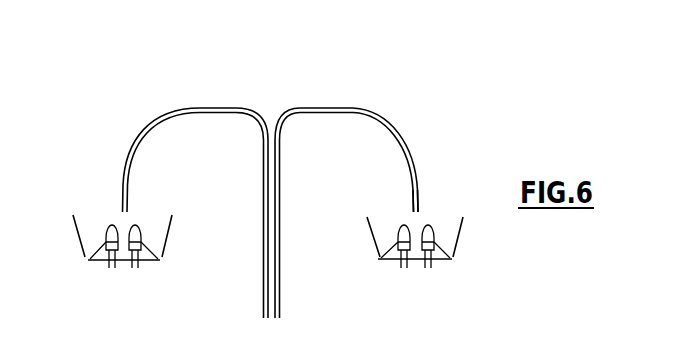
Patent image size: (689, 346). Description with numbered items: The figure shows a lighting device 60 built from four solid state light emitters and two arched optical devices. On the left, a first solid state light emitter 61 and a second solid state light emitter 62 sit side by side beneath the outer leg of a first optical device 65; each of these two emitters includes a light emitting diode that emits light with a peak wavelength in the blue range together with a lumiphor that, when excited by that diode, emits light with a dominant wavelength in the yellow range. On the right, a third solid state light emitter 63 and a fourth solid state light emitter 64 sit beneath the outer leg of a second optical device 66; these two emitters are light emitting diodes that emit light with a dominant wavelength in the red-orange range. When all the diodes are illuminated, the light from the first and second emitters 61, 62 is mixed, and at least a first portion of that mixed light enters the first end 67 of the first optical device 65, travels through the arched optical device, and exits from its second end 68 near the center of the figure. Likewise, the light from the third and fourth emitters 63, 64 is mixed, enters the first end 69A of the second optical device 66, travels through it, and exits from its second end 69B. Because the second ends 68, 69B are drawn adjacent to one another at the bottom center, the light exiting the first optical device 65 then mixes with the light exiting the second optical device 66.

The lighting device 60 is at (418, 110).
The first solid state light emitter 61 is at (88, 260).
The second solid state light emitter 62 is at (161, 260).
The third solid state light emitter 63 is at (378, 259).
The fourth solid state light emitter 64 is at (452, 259).
The first optical device 65 is at (200, 108).
The second optical device 66 is at (340, 108).
The first end of the first optical device 67 is at (122, 207).
The second end of the first optical device 68 is at (263, 310).
The first end of the second optical device 69A is at (418, 197).
The second end of the second optical device 69B is at (281, 310).